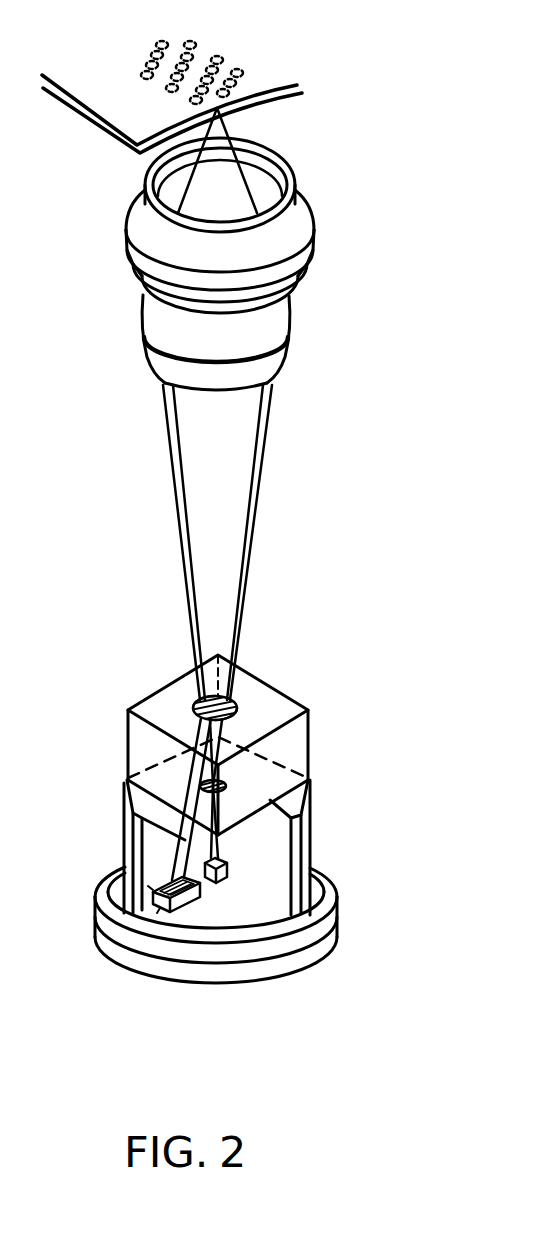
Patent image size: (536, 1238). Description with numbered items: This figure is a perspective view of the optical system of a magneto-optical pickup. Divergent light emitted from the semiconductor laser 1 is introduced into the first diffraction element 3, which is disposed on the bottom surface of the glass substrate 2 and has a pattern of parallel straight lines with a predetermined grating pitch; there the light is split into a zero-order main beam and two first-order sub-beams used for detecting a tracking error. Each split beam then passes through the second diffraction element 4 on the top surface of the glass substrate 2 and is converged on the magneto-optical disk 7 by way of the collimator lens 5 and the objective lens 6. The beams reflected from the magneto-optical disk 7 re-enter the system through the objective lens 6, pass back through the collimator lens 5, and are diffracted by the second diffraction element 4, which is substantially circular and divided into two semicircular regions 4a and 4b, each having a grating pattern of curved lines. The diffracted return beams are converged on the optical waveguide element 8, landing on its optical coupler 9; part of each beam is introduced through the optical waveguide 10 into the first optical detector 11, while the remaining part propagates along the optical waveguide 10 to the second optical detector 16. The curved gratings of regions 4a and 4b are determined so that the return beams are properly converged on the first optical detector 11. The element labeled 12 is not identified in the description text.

The semiconductor laser 1 is at (227, 872).
The glass substrate 2 is at (312, 747).
The first diffraction element 3 is at (227, 789).
The second diffraction element 4 is at (238, 712).
The semicircular region 4a is at (244, 716).
The semicircular region 4b is at (198, 702).
The collimator lens 5 is at (285, 342).
The objective lens 6 is at (313, 240).
The magneto-optical disk 7 is at (280, 93).
The optical waveguide element 8 is at (148, 886).
The optical coupler 9 is at (157, 913).
The optical waveguide 10 is at (203, 903).
The first optical detector 11 is at (216, 950).
The housing 12 is at (308, 820).
The second optical detector 16 is at (176, 903).